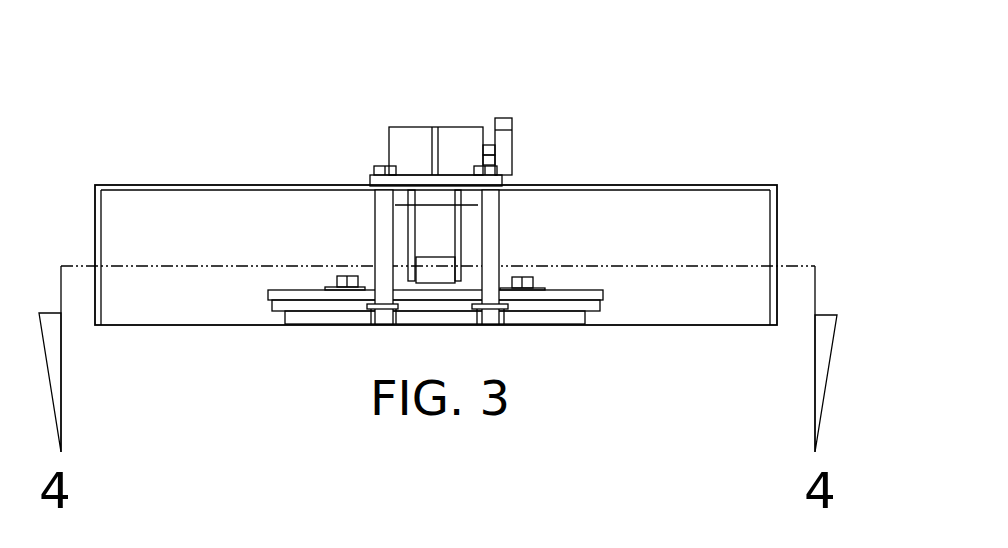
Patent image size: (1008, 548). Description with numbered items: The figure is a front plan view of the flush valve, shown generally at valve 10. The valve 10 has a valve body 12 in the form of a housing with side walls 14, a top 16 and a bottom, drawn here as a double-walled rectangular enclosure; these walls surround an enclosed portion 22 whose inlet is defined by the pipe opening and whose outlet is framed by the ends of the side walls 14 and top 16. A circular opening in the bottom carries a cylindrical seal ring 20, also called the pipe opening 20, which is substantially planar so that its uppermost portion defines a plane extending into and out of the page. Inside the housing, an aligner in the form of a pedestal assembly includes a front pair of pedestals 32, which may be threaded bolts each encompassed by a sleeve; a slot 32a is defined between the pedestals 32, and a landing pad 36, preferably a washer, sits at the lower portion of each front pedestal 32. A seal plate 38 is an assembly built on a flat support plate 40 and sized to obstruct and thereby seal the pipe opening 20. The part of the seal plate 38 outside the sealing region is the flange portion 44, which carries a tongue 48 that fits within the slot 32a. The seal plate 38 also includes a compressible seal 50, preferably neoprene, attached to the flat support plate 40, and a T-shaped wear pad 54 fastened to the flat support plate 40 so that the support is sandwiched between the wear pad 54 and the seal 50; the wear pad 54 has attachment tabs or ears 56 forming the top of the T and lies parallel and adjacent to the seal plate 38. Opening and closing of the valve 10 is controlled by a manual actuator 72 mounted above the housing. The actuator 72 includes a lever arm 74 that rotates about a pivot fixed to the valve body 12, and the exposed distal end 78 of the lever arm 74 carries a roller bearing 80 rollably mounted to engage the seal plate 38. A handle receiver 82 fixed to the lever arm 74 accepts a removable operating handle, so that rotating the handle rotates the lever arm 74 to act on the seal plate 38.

The valve 10 is at (687, 88).
The valve body 12 is at (785, 238).
The side walls 14 is at (777, 210).
The top 16 is at (736, 185).
The seal ring 20 is at (318, 313).
The enclosed portion 22 is at (667, 230).
The front pair of pedestals 32 is at (368, 210).
The slot 32a is at (437, 204).
The landing pad 36 is at (370, 308).
The seal plate 38 is at (240, 285).
The flat support plate 40 is at (277, 294).
The flange portion 44 is at (268, 315).
The tongue 48 is at (433, 293).
The seal 50 is at (598, 308).
The wear pad 54 is at (545, 287).
The attachment tabs or ears 56 is at (328, 272).
The actuator 72 is at (388, 107).
The lever arm 74 is at (458, 230).
The distal end 78 is at (470, 255).
The roller bearing 80 is at (449, 280).
The handle receiver 82 is at (502, 125).